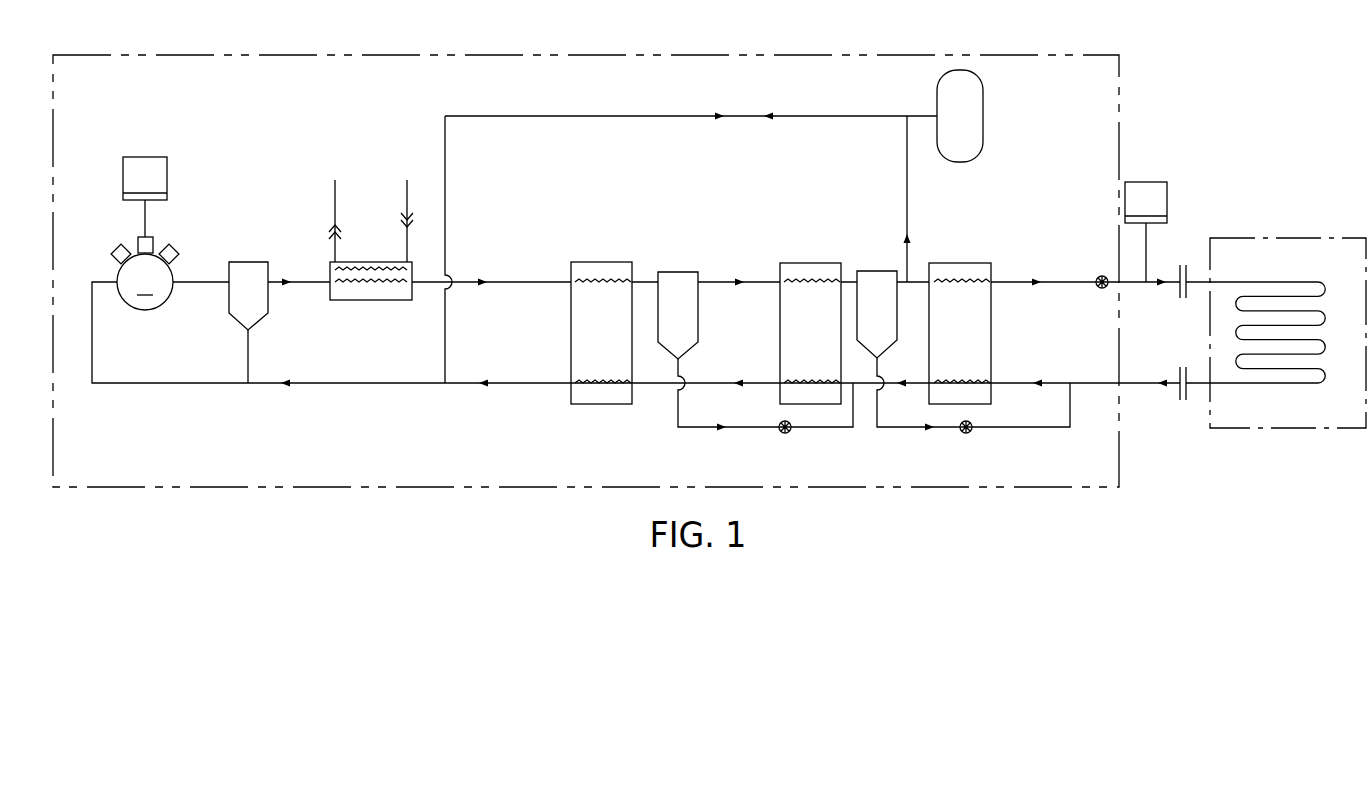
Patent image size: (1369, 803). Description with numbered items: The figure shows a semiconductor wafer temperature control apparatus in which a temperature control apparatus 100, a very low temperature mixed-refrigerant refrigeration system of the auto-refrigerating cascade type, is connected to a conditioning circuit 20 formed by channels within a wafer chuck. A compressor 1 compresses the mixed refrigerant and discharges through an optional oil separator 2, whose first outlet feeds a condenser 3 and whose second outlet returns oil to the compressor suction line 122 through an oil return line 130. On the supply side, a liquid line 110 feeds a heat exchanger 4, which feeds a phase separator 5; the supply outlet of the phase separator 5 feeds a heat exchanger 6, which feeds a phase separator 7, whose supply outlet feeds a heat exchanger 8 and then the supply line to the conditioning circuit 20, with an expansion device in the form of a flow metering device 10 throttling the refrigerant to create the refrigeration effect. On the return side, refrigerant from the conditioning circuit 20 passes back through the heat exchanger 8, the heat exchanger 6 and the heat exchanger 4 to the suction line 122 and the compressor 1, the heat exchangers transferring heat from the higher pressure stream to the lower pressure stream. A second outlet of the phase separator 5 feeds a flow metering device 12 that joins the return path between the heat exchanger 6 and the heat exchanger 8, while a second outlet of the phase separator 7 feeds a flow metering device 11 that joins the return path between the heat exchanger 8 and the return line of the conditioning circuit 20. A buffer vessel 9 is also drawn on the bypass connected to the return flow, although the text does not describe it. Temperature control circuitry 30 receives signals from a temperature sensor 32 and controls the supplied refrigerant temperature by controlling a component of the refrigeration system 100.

The temperature control apparatus 100 is at (647, 55).
The compressor 1 is at (145, 273).
The oil separator 2 is at (250, 262).
The condenser 3 is at (355, 262).
The heat exchanger 4 is at (592, 262).
The phase separator 5 is at (673, 272).
The heat exchanger 6 is at (810, 263).
The phase separator 7 is at (883, 271).
The heat exchanger 8 is at (965, 263).
The buffer tank 9 is at (987, 128).
The flow metering device 10 is at (1100, 278).
The flow metering device 11 is at (970, 434).
The flow metering device 12 is at (790, 434).
The conditioning circuit 20 is at (1283, 430).
The temperature control circuitry 30 is at (145, 197).
The temperature sensor 32 is at (1146, 232).
The liquid line 110 is at (537, 280).
The suction line 122 is at (537, 381).
The oil return line 130 is at (250, 366).